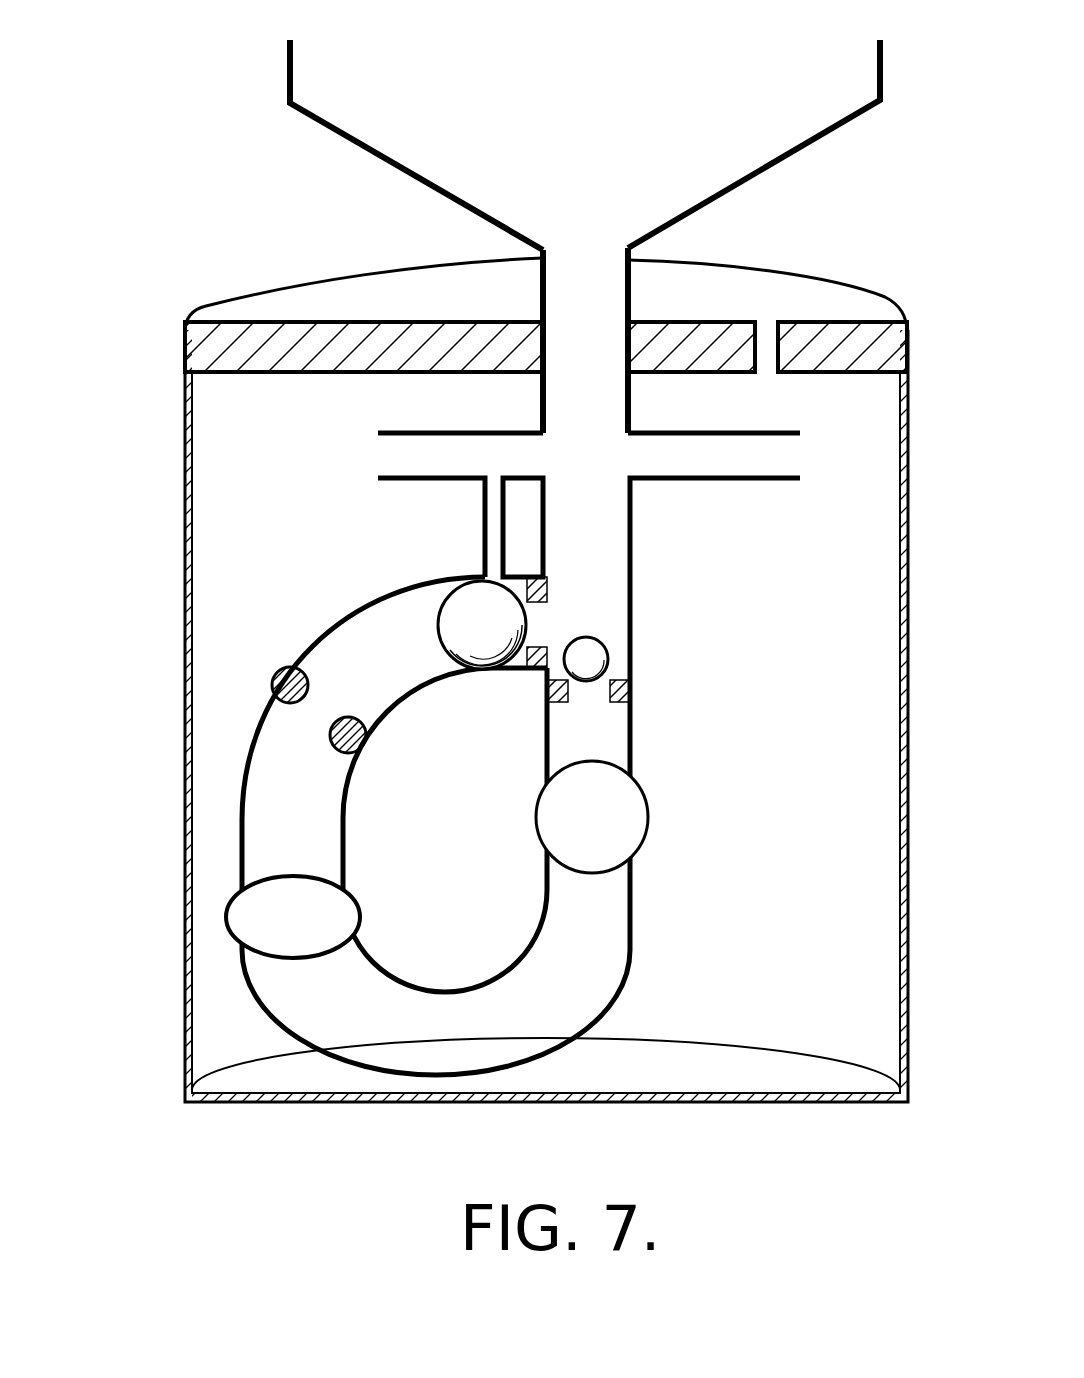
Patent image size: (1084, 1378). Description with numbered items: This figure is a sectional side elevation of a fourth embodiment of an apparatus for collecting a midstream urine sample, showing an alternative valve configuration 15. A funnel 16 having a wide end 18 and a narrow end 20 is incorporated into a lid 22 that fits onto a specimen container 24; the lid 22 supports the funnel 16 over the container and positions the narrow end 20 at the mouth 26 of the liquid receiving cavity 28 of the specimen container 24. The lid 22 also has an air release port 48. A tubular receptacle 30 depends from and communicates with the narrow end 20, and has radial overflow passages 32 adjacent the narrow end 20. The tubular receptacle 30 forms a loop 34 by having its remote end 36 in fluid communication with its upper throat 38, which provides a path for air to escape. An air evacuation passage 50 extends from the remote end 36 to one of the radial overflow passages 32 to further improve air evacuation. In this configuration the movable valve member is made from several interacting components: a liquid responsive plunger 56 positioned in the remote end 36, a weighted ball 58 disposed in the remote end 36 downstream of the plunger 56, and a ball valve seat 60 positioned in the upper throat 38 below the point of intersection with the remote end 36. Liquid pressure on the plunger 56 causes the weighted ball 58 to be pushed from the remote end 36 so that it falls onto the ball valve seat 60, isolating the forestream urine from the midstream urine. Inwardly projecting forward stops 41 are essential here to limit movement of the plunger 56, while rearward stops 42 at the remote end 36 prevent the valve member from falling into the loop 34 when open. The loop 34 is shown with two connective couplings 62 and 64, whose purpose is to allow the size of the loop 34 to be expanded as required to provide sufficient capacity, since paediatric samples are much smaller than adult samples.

The alternative valve configuration 15 is at (275, 241).
The funnel 16 is at (727, 185).
The wide end 18 is at (880, 45).
The narrow end 20 is at (540, 283).
The lid 22 is at (248, 335).
The specimen container 24 is at (183, 870).
The mouth 26 is at (195, 376).
The liquid receiving cavity 28 is at (792, 949).
The tubular receptacle 30 is at (632, 530).
The radial overflow passages 32 is at (440, 432).
The loop 34 is at (247, 727).
The remote end 36 is at (410, 582).
The upper throat 38 is at (633, 599).
The forward stops 41 is at (547, 590).
The rearward stops 42 is at (282, 668).
The air release port 48 is at (765, 325).
The air evacuation passage 50 is at (485, 535).
The liquid responsive plunger 56 is at (455, 625).
The weighted ball 58 is at (600, 652).
The ball valve seat 60 is at (623, 700).
The connective coupling 62 is at (345, 918).
The connective coupling 64 is at (625, 820).